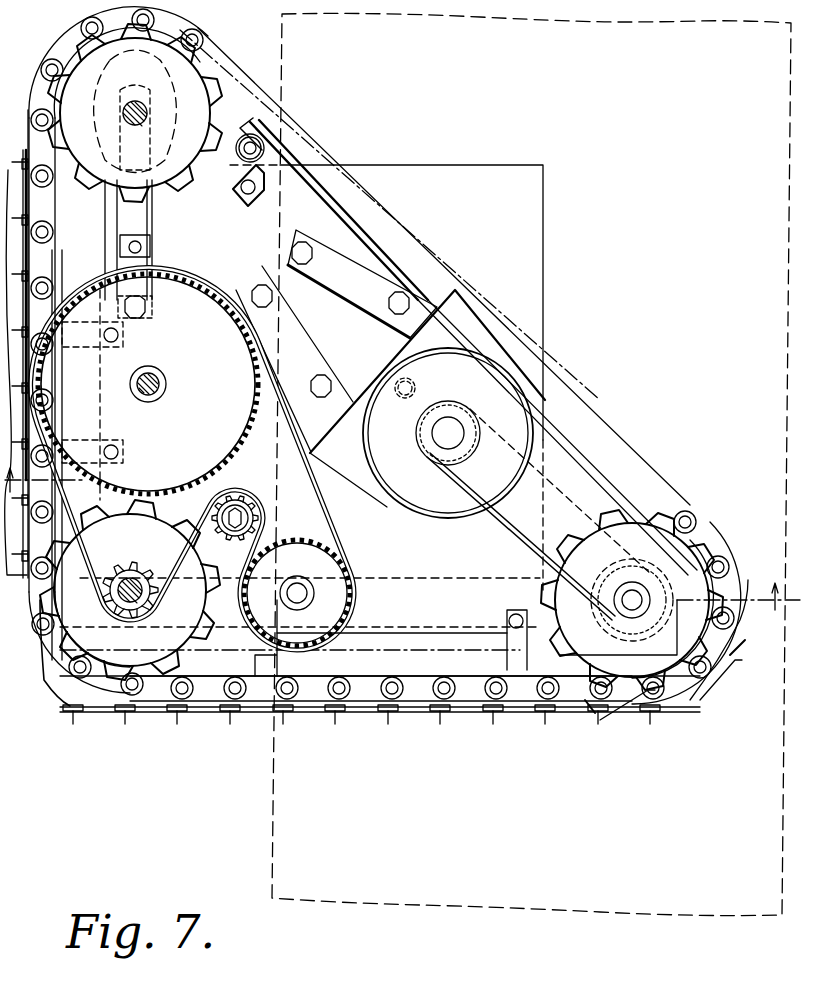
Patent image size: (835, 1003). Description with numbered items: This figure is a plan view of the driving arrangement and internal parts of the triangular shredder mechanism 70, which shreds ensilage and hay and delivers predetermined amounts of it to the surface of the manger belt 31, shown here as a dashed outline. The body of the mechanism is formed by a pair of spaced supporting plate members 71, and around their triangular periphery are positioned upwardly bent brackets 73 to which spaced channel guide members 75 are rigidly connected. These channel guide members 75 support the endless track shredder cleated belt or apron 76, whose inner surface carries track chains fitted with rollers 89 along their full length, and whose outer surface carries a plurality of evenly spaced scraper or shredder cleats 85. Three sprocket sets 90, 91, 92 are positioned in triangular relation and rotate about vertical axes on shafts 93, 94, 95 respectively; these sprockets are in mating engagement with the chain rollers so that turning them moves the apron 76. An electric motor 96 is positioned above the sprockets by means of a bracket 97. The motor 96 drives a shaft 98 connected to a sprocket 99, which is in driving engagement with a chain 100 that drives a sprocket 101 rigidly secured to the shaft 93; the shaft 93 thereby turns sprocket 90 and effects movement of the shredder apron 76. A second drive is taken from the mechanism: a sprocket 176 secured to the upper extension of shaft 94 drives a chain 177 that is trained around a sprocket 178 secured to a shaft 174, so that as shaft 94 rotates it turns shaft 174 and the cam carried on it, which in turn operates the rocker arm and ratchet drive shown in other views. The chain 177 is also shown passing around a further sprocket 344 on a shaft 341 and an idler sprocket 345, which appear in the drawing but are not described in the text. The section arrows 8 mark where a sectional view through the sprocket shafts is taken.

The section line 8- 8 is at (401, 557).
The manger belt 31 is at (345, 905).
The shredder mechanism 70 is at (385, 398).
The supporting plate members 71 is at (478, 625).
The upwardly bent brackets 73 is at (120, 336).
The channel guide members 75 is at (57, 266).
The endless track shredder cleated belt or apron 76 is at (412, 716).
The scraper or shredder cleats 85 is at (437, 718).
The rollers 89 is at (72, 680).
The sprocket set 90 is at (665, 663).
The sprocket set 91 is at (128, 662).
The sprocket set 92 is at (185, 95).
The shaft 93 is at (641, 598).
The shaft 94 is at (138, 606).
The shaft 95 is at (124, 112).
The electric motor 96 is at (505, 380).
The bracket 97 is at (315, 362).
The shaft 98 is at (443, 437).
The sprocket 99 is at (468, 463).
The chain 100 is at (503, 537).
The sprocket 101 is at (600, 574).
The shaft 174 is at (163, 380).
The sprocket 176 is at (138, 569).
The chain 177 is at (175, 586).
The sprocket 178 is at (148, 384).
The shaft 341 is at (316, 598).
The sprocket 344 is at (320, 560).
The idler sprocket 345 is at (254, 517).